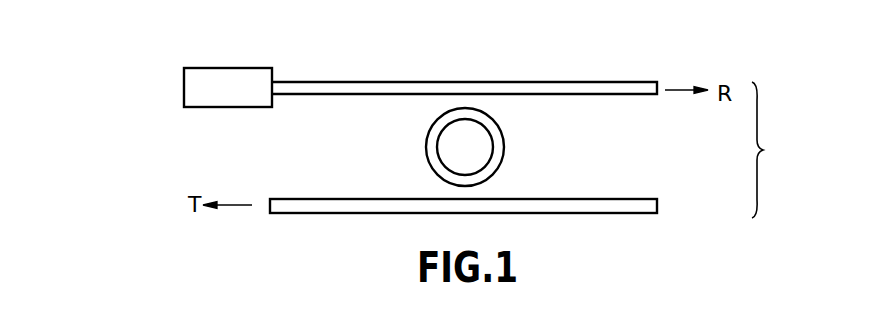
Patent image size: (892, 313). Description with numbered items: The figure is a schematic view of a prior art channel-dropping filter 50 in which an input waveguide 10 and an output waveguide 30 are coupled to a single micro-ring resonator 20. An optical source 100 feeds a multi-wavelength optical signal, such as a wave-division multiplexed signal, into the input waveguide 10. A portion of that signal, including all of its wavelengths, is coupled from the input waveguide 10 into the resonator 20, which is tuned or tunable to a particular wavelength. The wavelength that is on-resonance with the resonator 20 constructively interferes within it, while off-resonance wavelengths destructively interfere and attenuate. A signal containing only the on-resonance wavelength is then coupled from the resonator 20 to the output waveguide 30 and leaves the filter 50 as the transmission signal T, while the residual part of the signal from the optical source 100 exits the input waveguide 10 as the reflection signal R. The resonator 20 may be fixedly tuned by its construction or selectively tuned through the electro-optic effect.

The channel-dropping filter 50 is at (150, 70).
The optical source 100 is at (236, 66).
The input waveguide 10 is at (334, 83).
The resonator 20 is at (497, 145).
The output waveguide 30 is at (283, 206).